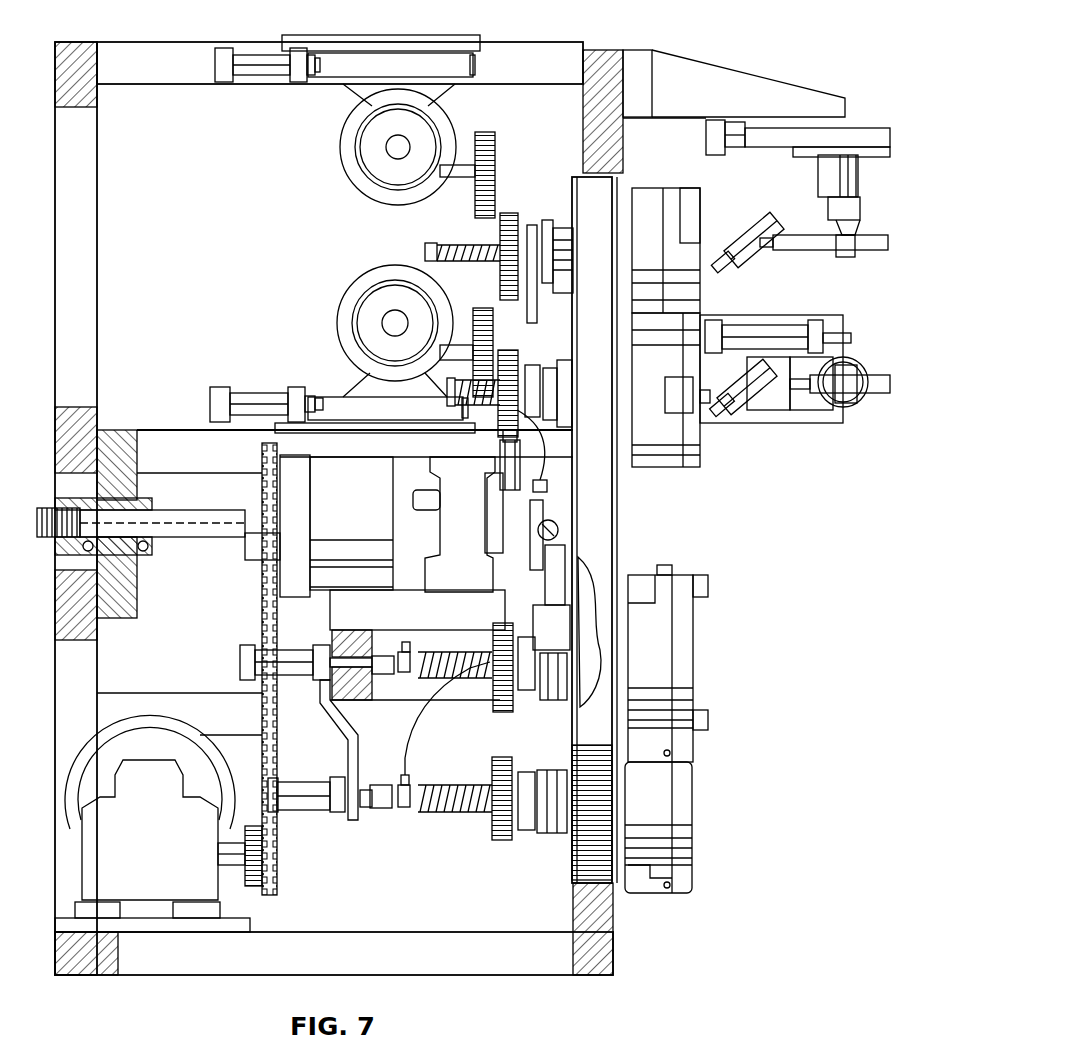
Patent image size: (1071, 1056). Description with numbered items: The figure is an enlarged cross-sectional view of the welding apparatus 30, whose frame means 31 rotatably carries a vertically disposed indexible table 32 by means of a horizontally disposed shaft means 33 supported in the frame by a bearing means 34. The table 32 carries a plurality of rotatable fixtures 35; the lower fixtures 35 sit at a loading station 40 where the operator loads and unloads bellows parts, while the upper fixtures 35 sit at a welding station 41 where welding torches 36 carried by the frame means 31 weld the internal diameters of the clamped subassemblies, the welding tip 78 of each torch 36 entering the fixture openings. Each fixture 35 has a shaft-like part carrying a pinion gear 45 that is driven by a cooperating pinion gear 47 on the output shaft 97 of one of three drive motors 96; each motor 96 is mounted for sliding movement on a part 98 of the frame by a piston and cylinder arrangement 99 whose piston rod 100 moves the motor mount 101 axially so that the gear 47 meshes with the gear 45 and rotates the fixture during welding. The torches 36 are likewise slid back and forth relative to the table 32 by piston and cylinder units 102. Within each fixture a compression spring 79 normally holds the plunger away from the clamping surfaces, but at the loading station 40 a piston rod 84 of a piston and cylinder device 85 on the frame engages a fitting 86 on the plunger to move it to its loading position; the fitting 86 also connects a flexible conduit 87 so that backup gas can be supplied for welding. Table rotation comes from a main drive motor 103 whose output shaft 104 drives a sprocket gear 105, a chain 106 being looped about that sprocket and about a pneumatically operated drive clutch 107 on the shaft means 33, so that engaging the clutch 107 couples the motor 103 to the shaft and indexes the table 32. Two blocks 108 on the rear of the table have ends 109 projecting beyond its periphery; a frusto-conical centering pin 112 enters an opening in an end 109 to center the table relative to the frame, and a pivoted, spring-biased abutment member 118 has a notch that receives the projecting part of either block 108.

The apparatus 30 is at (753, 50).
The frame means 31 is at (150, 52).
The rotatable table 32 is at (604, 523).
The shaft means 33 is at (403, 510).
The bearing means 34 is at (118, 490).
The rotatable fixture 35 is at (703, 300).
The welding torch 36 is at (760, 232).
The loading station 40 is at (715, 540).
The welding station 41 is at (798, 279).
The pinion gear 45 is at (508, 214).
The pinion gear 47 is at (490, 155).
The welding tip 78 is at (733, 272).
The compression spring 79 is at (474, 654).
The piston rod 84 is at (388, 658).
The piston and cylinder device 85 is at (284, 655).
The fitting 86 is at (418, 255).
The flexible conduit 87 is at (522, 452).
The drive motor 96 is at (422, 135).
The output shaft 97 is at (467, 178).
The part of frame means 98 is at (425, 50).
The piston and cylinder arrangement 99 is at (273, 88).
The piston rod 100 is at (316, 76).
The motor mount 101 is at (456, 68).
The piston and cylinder unit 102 is at (792, 150).
The main drive motor 103 is at (195, 885).
The output shaft 104 is at (230, 850).
The sprocket gear 105 is at (277, 878).
The chain 106 is at (279, 760).
The drive clutch 107 is at (335, 482).
The block 108 is at (566, 549).
The end of block 109 is at (575, 220).
The centering pin 112 is at (560, 521).
The abutment member 118 is at (596, 565).